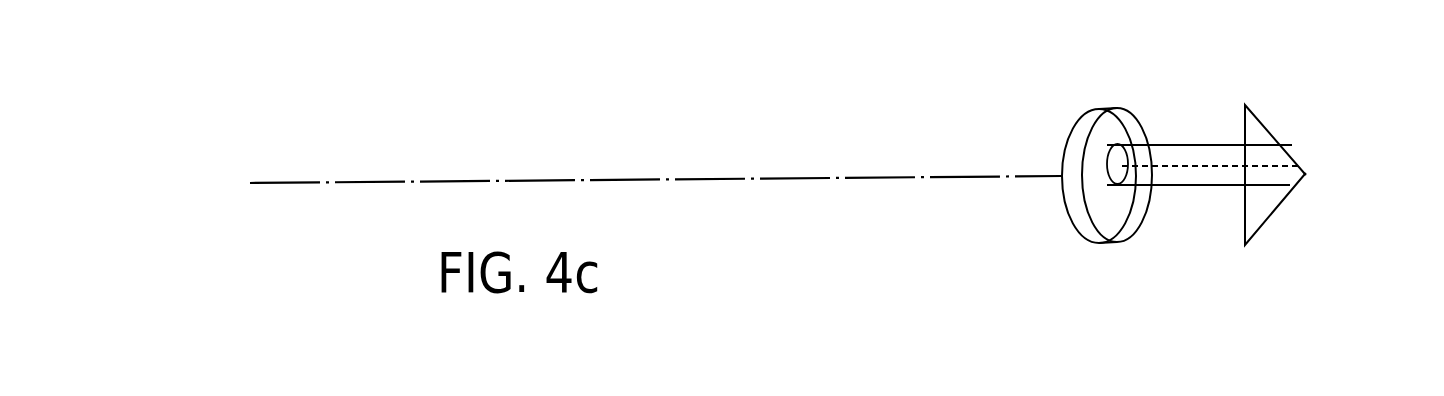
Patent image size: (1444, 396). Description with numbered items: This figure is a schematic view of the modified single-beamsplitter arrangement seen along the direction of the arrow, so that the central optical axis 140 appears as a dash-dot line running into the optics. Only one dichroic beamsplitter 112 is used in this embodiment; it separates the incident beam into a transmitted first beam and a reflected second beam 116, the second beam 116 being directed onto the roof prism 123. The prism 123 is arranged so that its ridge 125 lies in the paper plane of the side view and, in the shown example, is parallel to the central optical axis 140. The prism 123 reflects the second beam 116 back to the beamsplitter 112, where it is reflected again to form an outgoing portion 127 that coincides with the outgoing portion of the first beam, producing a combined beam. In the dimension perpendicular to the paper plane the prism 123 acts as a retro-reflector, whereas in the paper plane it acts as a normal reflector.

The central optical axis 140 is at (628, 183).
The dichroic beamsplitter 112 is at (1100, 112).
The second beam 116 is at (1203, 235).
The outgoing portion of the second beam 127 is at (1188, 175).
The roof prism 123 is at (1263, 140).
The ridge of the prism 125 is at (1305, 174).